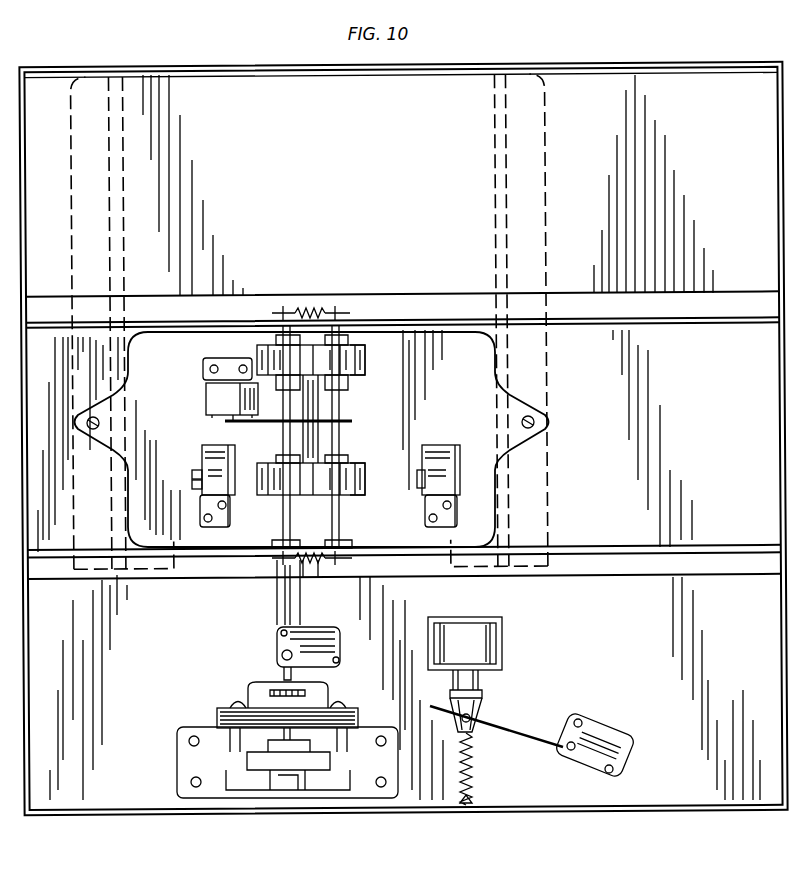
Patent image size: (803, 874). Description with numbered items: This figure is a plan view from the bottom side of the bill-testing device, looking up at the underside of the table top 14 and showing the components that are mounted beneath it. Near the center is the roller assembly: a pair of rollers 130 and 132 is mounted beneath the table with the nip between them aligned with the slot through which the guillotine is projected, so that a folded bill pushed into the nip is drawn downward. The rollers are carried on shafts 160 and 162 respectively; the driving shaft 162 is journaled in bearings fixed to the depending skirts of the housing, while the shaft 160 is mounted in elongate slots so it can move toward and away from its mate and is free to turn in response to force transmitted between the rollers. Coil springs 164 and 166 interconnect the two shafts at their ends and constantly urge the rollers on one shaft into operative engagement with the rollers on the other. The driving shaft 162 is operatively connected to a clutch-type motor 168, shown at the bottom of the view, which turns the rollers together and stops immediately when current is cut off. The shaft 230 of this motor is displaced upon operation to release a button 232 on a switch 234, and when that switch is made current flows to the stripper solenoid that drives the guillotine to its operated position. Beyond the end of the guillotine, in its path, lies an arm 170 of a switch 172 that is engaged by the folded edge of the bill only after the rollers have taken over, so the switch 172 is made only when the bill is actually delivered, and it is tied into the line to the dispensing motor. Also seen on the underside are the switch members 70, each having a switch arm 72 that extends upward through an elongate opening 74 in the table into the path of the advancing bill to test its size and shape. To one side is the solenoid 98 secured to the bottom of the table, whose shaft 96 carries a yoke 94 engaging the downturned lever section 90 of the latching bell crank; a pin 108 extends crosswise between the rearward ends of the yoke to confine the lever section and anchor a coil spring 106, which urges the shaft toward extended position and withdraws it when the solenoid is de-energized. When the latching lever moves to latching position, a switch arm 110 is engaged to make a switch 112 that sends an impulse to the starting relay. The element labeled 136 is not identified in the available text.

The flat top 14 is at (658, 643).
The switch member 70 is at (217, 447).
The switch arm 72 is at (194, 470).
The opening 74 is at (190, 488).
The lever section 90 is at (480, 707).
The yoke 94 is at (482, 697).
The shaft 96 is at (482, 677).
The solenoid 98 is at (480, 633).
The coil spring 106 is at (474, 779).
The pin 108 is at (470, 730).
The switch arm 110 is at (510, 727).
The switch 112 is at (605, 734).
The roller 130 is at (365, 484).
The roller 132 is at (262, 356).
The drum flange 136 is at (365, 350).
The shaft 160 is at (345, 436).
The driving shaft 162 is at (283, 436).
The coil spring 164 is at (318, 303).
The coil spring 166 is at (312, 568).
The clutch-type motor 168 is at (206, 718).
The switch arm 170 is at (345, 420).
The switch 172 is at (215, 397).
The shaft 230 is at (272, 673).
The button 232 is at (278, 652).
The switch 234 is at (275, 640).